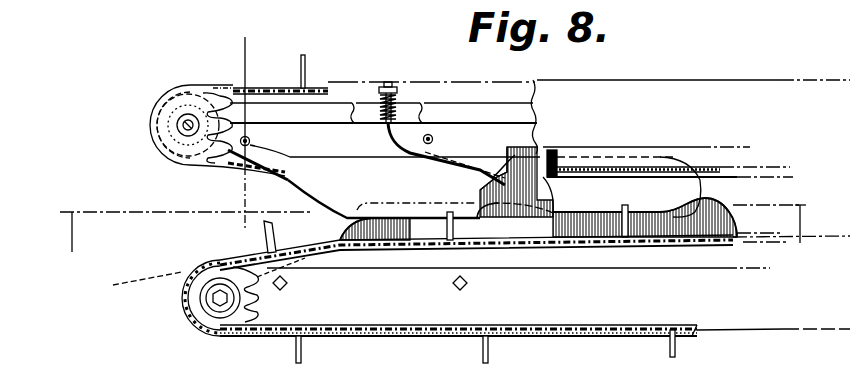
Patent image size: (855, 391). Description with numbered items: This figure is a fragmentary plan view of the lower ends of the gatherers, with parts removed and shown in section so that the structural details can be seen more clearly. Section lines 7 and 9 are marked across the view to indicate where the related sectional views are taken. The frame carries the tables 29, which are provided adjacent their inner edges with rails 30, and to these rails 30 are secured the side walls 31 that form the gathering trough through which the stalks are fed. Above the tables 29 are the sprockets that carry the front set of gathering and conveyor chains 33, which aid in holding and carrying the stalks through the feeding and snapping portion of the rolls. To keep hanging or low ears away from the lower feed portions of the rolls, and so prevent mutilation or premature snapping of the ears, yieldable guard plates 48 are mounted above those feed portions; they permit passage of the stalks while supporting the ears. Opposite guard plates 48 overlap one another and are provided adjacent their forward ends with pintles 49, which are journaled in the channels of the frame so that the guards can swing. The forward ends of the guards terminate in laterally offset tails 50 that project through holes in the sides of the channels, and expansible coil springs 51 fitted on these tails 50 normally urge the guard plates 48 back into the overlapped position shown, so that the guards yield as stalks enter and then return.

The section line 7- 7 is at (436, 215).
The section line 9- 9 is at (207, 43).
The table 29 is at (683, 92).
The rail 30 is at (740, 253).
The side wall 31 is at (663, 165).
The front set of gathering and conveyor chains 33 is at (300, 86).
The yieldable guard plate 48 is at (489, 170).
The pintle 49 is at (250, 141).
The tail 50 is at (388, 84).
The expansible coil spring 51 is at (398, 108).